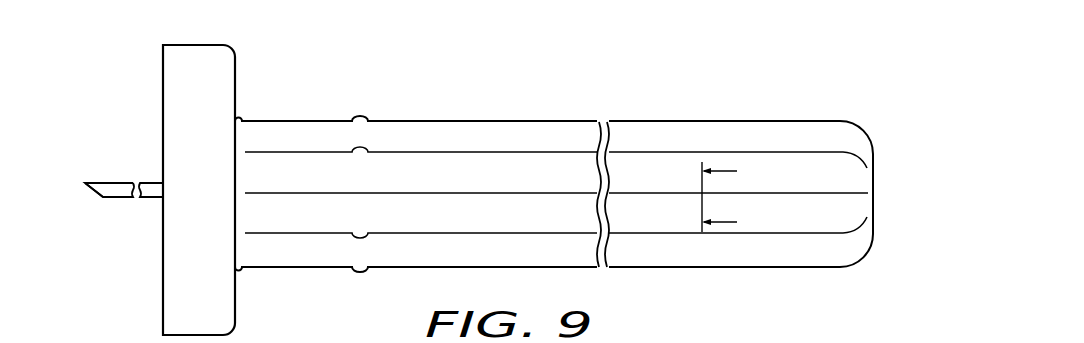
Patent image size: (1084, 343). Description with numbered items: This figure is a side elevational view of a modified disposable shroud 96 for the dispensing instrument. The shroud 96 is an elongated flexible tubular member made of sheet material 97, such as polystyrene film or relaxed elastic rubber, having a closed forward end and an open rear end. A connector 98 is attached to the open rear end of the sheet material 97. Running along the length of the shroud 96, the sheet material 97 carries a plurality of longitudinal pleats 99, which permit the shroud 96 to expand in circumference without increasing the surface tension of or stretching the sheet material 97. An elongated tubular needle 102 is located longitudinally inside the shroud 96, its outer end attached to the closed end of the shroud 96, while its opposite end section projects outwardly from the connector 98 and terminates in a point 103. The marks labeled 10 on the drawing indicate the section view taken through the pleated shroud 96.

The shroud 96 is at (539, 110).
The sheet material 97 is at (708, 121).
The connector 98 is at (235, 52).
The longitudinal pleats 99 is at (574, 192).
The dimension spacing 10 is at (734, 199).
The tubular needle 102 is at (120, 191).
The point 103 is at (85, 183).